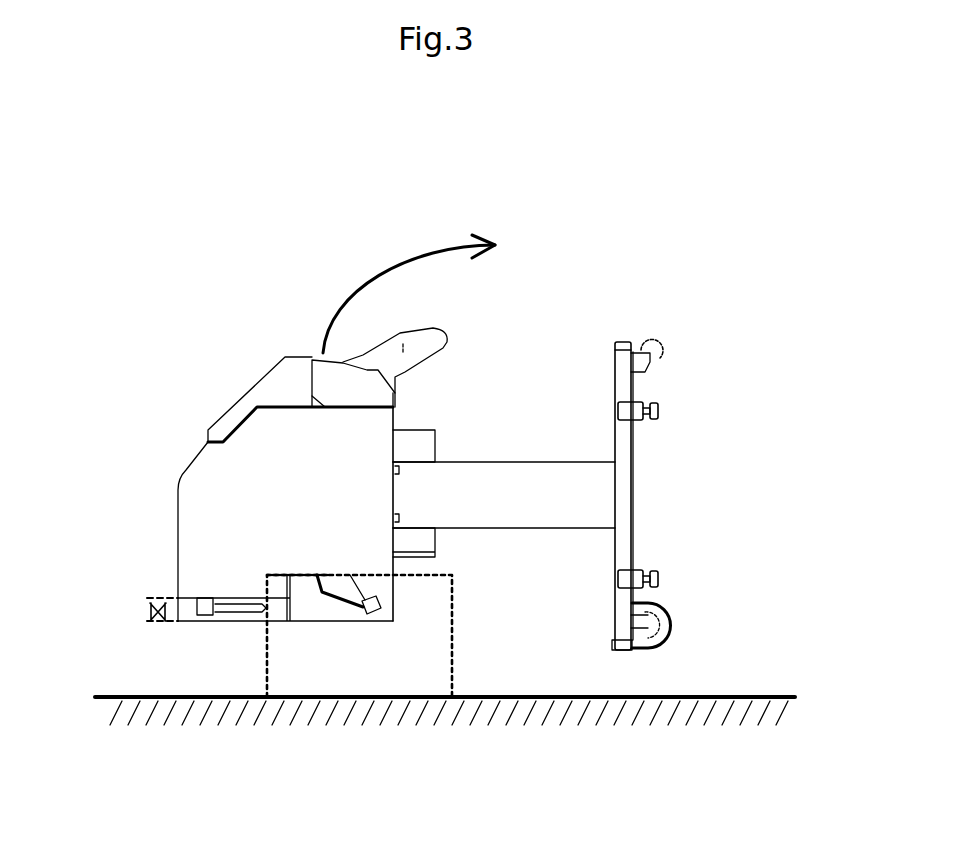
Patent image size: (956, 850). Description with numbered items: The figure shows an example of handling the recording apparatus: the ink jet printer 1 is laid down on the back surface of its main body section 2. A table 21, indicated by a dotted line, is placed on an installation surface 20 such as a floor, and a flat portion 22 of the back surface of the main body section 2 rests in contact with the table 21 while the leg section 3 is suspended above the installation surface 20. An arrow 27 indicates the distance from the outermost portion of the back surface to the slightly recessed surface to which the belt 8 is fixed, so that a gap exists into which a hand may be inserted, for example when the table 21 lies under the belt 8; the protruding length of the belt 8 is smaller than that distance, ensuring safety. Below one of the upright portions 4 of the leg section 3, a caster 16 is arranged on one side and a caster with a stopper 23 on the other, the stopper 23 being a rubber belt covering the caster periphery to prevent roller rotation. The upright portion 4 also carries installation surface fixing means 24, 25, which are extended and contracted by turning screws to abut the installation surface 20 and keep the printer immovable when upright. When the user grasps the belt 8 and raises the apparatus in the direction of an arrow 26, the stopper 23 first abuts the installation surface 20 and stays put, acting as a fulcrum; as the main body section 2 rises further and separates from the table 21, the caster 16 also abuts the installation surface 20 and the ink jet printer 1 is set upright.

The ink jet printer 1 is at (210, 326).
The main body section 2 is at (200, 483).
The leg section 3 is at (555, 368).
The upright portion 4 is at (460, 472).
The belt 8 is at (200, 608).
The caster 16 is at (672, 350).
The installation surface 20 is at (742, 697).
The table 21 is at (450, 655).
The flat portion 22 is at (303, 577).
The caster with a stopper 23 is at (672, 628).
The installation surface fixing means 24 is at (660, 398).
The installation surface fixing means 25 is at (660, 572).
The arrow 26 is at (388, 268).
The arrow 27 is at (152, 612).